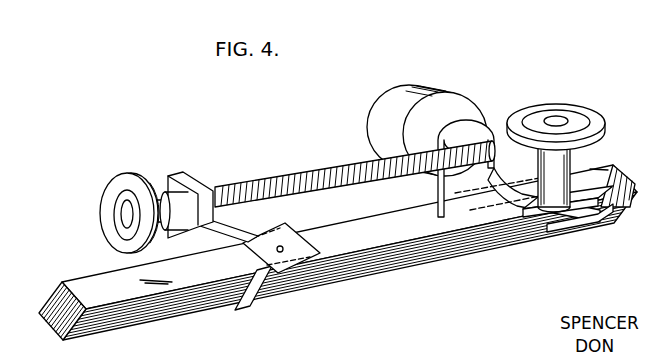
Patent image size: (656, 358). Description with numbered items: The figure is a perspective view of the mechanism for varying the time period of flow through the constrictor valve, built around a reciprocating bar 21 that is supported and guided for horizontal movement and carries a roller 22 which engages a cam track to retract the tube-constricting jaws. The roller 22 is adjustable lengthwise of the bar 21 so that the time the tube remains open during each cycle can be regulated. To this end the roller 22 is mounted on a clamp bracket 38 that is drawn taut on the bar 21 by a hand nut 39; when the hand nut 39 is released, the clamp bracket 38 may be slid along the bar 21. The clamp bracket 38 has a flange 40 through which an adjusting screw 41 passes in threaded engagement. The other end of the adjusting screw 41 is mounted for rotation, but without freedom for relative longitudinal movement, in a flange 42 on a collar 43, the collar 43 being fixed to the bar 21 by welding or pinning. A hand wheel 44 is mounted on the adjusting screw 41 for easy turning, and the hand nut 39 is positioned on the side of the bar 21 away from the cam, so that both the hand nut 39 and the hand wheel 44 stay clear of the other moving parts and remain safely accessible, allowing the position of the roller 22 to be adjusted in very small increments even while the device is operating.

The reciprocating bar 21 is at (381, 262).
The roller 22 is at (452, 93).
The clamp bracket 38 is at (520, 203).
The hand nut 39 is at (598, 118).
The flange 40 is at (492, 108).
The adjusting screw 41 is at (318, 170).
The flange 42 is at (195, 176).
The collar 43 is at (277, 303).
The hand wheel 44 is at (127, 175).